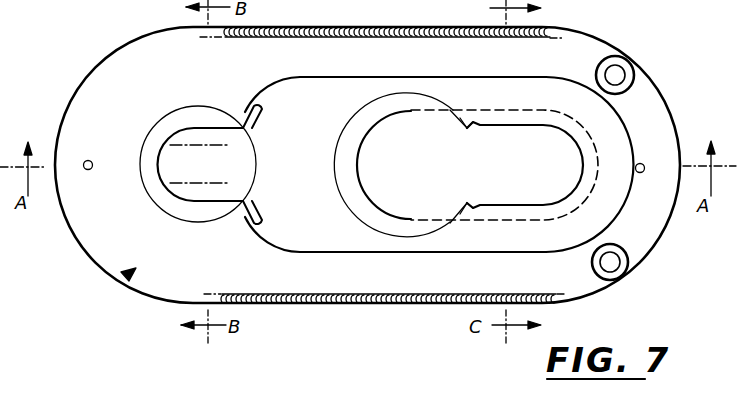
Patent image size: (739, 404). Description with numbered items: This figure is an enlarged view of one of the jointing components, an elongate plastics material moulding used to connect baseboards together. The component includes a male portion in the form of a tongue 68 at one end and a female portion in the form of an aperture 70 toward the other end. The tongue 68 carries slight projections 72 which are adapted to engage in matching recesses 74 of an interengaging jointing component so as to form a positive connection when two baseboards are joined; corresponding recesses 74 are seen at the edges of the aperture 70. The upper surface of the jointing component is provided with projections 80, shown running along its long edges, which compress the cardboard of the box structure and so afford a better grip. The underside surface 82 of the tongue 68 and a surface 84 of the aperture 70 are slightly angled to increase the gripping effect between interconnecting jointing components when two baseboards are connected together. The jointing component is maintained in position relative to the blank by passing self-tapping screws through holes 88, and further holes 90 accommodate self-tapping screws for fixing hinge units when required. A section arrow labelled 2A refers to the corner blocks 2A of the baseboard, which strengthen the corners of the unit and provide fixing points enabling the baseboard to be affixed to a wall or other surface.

The tongue 68 is at (182, 158).
The aperture 70 is at (560, 163).
The projections 72 is at (248, 104).
The recesses 74 is at (468, 126).
The projections 80 is at (330, 302).
The underside surface 82 is at (147, 195).
The surface 84 is at (580, 208).
The holes 88 is at (624, 68).
The holes 90 is at (92, 160).
The corner blocks 2A is at (130, 273).